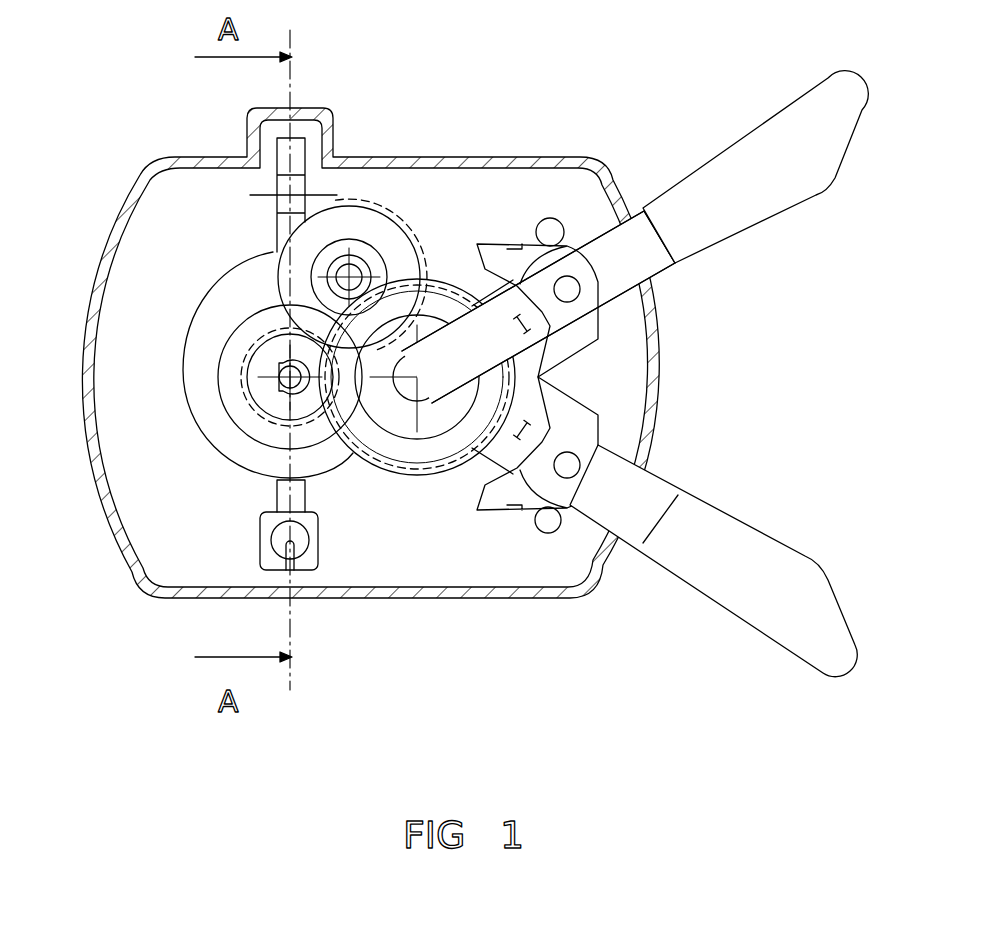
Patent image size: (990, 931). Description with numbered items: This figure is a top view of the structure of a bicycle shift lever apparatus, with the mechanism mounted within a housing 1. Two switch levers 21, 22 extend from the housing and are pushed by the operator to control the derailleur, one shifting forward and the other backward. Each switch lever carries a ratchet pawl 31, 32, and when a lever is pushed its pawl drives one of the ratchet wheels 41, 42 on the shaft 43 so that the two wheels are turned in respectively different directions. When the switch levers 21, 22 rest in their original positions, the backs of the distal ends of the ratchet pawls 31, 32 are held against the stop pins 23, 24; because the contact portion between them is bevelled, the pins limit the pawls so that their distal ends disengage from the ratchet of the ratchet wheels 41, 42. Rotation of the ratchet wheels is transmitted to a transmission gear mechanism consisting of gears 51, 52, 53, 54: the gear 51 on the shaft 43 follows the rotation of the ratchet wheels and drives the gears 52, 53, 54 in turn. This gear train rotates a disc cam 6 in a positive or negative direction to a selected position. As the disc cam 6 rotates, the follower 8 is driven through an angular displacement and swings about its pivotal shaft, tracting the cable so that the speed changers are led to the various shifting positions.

The housing 1 is at (120, 212).
The disc cam 6 is at (195, 367).
The follower 8 is at (280, 186).
The switch lever 21 is at (855, 650).
The switch lever 22 is at (840, 110).
The stop pin 23 is at (552, 530).
The stop pin 24 is at (548, 228).
The ratchet pawl 31 is at (590, 430).
The ratchet pawl 32 is at (605, 338).
The ratchet wheel 41 is at (417, 423).
The ratchet wheel 42 is at (417, 377).
The shaft 43 is at (428, 372).
The gear 51 is at (400, 455).
The gear 52 is at (377, 260).
The gear 53 is at (410, 268).
The gear 54 is at (257, 397).